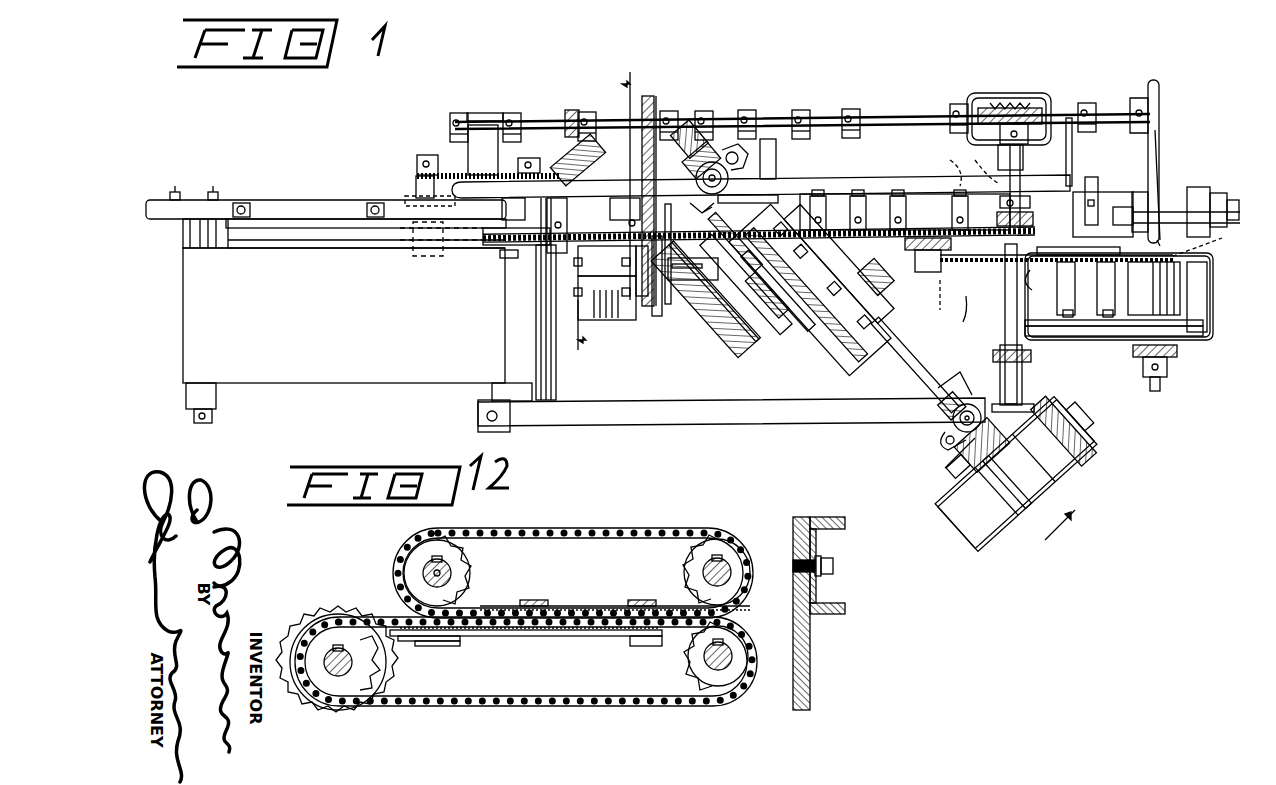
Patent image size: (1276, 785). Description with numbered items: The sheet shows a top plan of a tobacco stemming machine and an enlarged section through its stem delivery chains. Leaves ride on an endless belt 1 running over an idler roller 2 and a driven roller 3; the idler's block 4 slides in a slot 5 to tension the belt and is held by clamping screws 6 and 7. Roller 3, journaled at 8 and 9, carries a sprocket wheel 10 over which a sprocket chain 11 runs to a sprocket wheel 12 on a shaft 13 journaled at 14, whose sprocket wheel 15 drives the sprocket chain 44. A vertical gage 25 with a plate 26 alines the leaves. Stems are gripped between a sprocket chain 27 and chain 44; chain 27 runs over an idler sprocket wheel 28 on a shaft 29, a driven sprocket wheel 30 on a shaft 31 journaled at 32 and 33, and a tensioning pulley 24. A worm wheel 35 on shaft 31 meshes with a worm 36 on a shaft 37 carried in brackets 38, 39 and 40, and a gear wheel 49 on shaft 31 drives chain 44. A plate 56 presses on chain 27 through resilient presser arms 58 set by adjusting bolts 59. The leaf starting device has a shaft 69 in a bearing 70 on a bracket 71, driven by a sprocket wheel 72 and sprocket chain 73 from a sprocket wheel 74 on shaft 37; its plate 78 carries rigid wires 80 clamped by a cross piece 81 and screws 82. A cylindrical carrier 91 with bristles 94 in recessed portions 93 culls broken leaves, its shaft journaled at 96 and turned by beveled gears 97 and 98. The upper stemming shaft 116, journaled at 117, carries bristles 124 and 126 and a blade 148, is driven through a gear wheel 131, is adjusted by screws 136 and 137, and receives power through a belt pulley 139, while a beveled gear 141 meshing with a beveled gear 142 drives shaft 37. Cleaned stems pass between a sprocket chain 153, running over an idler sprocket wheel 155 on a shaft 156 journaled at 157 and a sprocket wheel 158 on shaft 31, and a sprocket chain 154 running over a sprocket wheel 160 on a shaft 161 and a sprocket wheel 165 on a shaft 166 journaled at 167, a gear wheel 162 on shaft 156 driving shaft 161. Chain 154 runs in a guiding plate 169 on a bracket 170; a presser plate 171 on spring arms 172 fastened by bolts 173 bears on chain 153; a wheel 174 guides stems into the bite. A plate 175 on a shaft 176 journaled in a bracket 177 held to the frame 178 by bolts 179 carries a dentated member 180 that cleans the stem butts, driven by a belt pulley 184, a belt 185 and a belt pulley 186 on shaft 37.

In FIG. 1, the endless belt 1 is at (266, 373).
In FIG. 1, the idler roller 2 is at (185, 243).
In FIG. 1, the driven roller 3 is at (556, 395).
In FIG. 1, the block 4 is at (601, 211).
In FIG. 1, the slot 5 is at (1006, 499).
In FIG. 1, the clamping screw 6 is at (174, 184).
In FIG. 1, the clamping screw 7 is at (213, 184).
In FIG. 1, the journal 8 is at (574, 424).
In FIG. 1, the journal 9 is at (530, 186).
In FIG. 1, the sprocket wheel 10 is at (548, 158).
In FIG. 1, the sprocket chain 11 is at (448, 162).
In FIG. 1, the sprocket wheel 12 is at (416, 173).
In FIG. 1, the shaft 13 is at (416, 186).
In FIG. 1, the journal 14 is at (410, 204).
In FIG. 1, the sprocket wheel 15 is at (412, 236).
In FIG. 1, the guiding and tensioning pulley 24 is at (742, 195).
In FIG. 1, the vertical gage 25 is at (286, 219).
In FIG. 1, the horizontally extending plate 26 is at (324, 242).
In FIG. 1, the endless sprocket chain 27 is at (538, 270).
In FIG. 1, the idler sprocket wheel 28 is at (492, 250).
In FIG. 1, the shaft 29 is at (492, 196).
In FIG. 1, the driven sprocket wheel 30 is at (1032, 218).
In FIG. 1, the shaft 31 is at (1005, 292).
In FIG. 12, the shaft 31 is at (425, 568).
In FIG. 1, the journal 32 is at (1022, 380).
In FIG. 1, the journal 33 is at (981, 164).
In FIG. 1, the worm wheel 35 is at (1032, 106).
In FIG. 1, the worm 36 is at (1010, 94).
In FIG. 1, the shaft 37 is at (878, 116).
In FIG. 1, the bracket 38 is at (1074, 103).
In FIG. 1, the bracket 39 is at (766, 110).
In FIG. 1, the bracket 40 is at (472, 113).
In FIG. 1, the endless sprocket chain 44 is at (412, 258).
In FIG. 1, the gear wheel 49 is at (993, 356).
In FIG. 1, the plate 56 is at (924, 194).
In FIG. 1, the resilient presser arm 58 is at (858, 196).
In FIG. 1, the adjusting bolt 59 is at (822, 194).
In FIG. 1, the shaft 69 is at (640, 300).
In FIG. 1, the bearing 70 is at (690, 300).
In FIG. 1, the bracket 71 is at (668, 305).
In FIG. 1, the sprocket wheel 72 is at (658, 296).
In FIG. 1, the sprocket chain 73 is at (644, 155).
In FIG. 1, the sprocket wheel 74 is at (650, 108).
In FIG. 1, the plate 78 is at (536, 300).
In FIG. 1, the short rigid wires 80 is at (622, 320).
In FIG. 1, the cross piece 81 is at (585, 305).
In FIG. 1, the clamping screw 82 is at (598, 290).
In FIG. 1, the carrier 91 is at (766, 340).
In FIG. 1, the recessed portion 93 is at (748, 340).
In FIG. 1, the bristles 94 is at (730, 345).
In FIG. 1, the journal 96 is at (592, 166).
In FIG. 1, the beveled gear 97 is at (560, 128).
In FIG. 1, the beveled gear 98 is at (570, 110).
In FIG. 1, the shaft 116 is at (918, 380).
In FIG. 1, the bearing 117 is at (958, 388).
In FIG. 1, the bristles 124 is at (830, 340).
In FIG. 1, the bristles 126 is at (840, 278).
In FIG. 1, the gear wheel 131 is at (960, 478).
In FIG. 1, the adjusting screw 136 is at (942, 428).
In FIG. 1, the adjusting screw 137 is at (726, 150).
In FIG. 1, the fast belt pulley 139 is at (953, 528).
In FIG. 1, the beveled gear 141 is at (688, 111).
In FIG. 1, the beveled gear 142 is at (690, 111).
In FIG. 1, the blade 148 is at (890, 268).
In FIG. 1, the endless sprocket chain 153 is at (1210, 292).
In FIG. 12, the endless sprocket chain 153 is at (575, 530).
In FIG. 12, the endless sprocket chain 154 is at (536, 703).
In FIG. 1, the idler sprocket wheel 155 is at (1214, 241).
In FIG. 12, the idler sprocket wheel 155 is at (714, 548).
In FIG. 1, the shaft 156 is at (1205, 318).
In FIG. 12, the shaft 156 is at (722, 566).
In FIG. 1, the journal 157 is at (1195, 336).
In FIG. 12, the sprocket wheel 158 is at (462, 546).
In FIG. 12, the sprocket wheel 160 is at (688, 660).
In FIG. 12, the shaft 161 is at (722, 652).
In FIG. 1, the gear wheel 162 is at (1175, 362).
In FIG. 1, the sprocket wheel 165 is at (935, 306).
In FIG. 12, the sprocket wheel 165 is at (372, 672).
In FIG. 1, the shaft 166 is at (965, 318).
In FIG. 12, the shaft 166 is at (330, 672).
In FIG. 1, the bearing 167 is at (944, 163).
In FIG. 1, the supporting and guiding plate 169 is at (1038, 280).
In FIG. 12, the supporting and guiding plate 169 is at (488, 640).
In FIG. 12, the bracket 170 is at (450, 648).
In FIG. 1, the presser plate 171 is at (1056, 255).
In FIG. 12, the presser plate 171 is at (590, 604).
In FIG. 1, the spring arm 172 is at (1057, 298).
In FIG. 12, the spring arm 172 is at (532, 600).
In FIG. 1, the bolt 173 is at (1066, 318).
In FIG. 1, the wheel 174 is at (905, 244).
In FIG. 12, the wheel 174 is at (322, 612).
In FIG. 1, the plate 175 is at (1108, 192).
In FIG. 1, the shaft 176 is at (1122, 207).
In FIG. 1, the supporting bracket 177 is at (1206, 188).
In FIG. 12, the supporting bracket 177 is at (836, 605).
In FIG. 12, the frame 178 is at (812, 652).
In FIG. 12, the bolt 179 is at (833, 564).
In FIG. 1, the dentated member 180 is at (1098, 177).
In FIG. 1, the belt pulley 184 is at (1166, 180).
In FIG. 1, the belt 185 is at (1160, 156).
In FIG. 1, the belt pulley 186 is at (1146, 80).